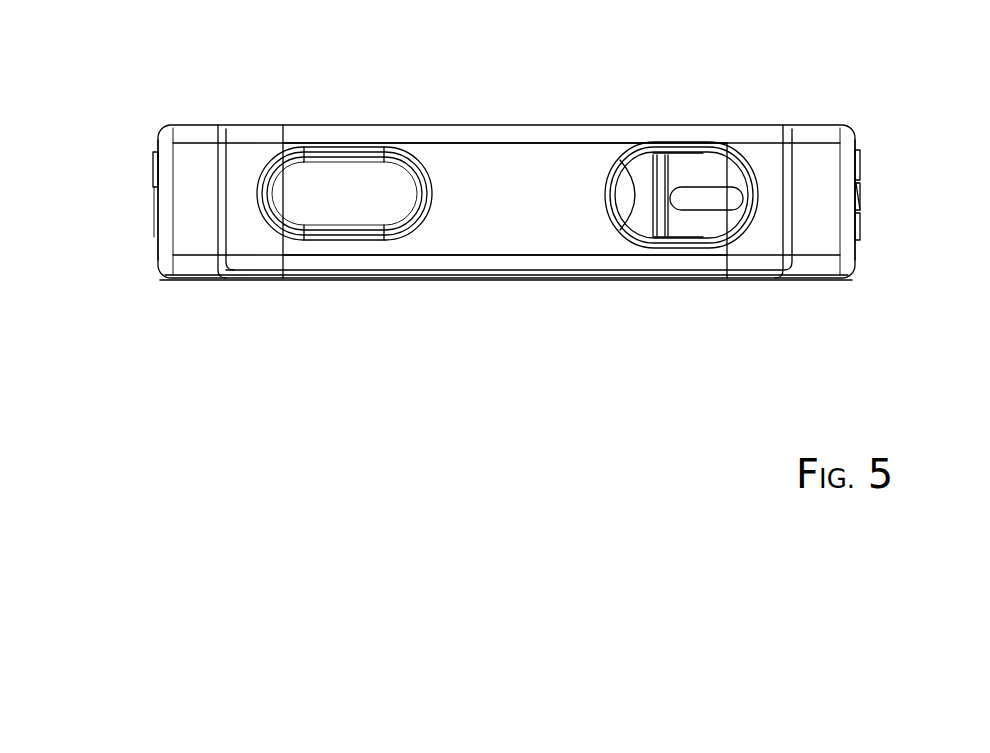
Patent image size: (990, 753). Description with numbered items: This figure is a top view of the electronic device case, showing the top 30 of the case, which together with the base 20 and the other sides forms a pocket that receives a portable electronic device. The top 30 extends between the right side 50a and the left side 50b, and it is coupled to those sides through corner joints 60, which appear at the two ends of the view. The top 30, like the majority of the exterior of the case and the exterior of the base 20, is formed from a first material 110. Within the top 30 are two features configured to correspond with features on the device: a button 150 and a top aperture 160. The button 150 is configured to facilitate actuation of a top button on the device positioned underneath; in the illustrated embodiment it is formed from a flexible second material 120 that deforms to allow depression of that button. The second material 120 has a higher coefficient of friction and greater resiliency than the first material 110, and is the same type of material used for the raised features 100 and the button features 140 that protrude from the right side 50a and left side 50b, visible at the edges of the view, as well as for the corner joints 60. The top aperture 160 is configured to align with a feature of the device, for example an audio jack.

The base 20 is at (496, 278).
The top 30 is at (510, 190).
The right side 50a is at (156, 240).
The left side 50b is at (858, 240).
The corner joint 60 is at (198, 167).
The raised feature 100 is at (152, 177).
The first material 110 is at (547, 213).
The second material 120 is at (307, 202).
The button feature 140 is at (860, 196).
The button 150 is at (298, 187).
The top aperture 160 is at (700, 170).